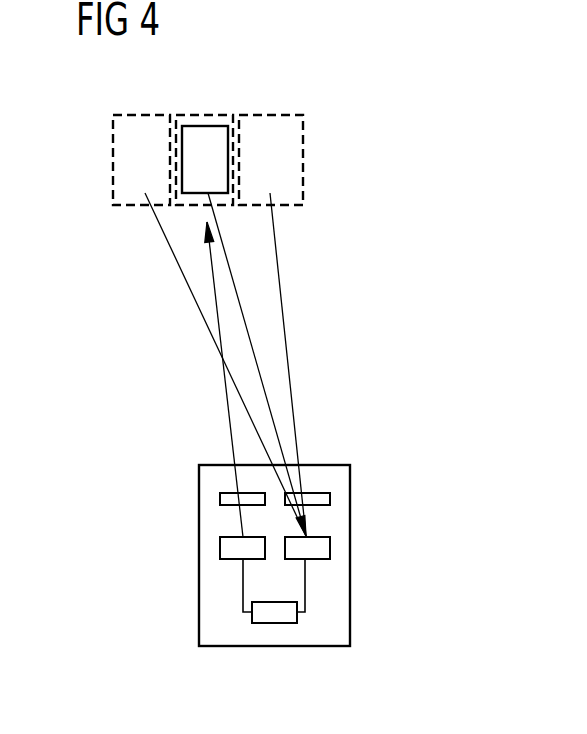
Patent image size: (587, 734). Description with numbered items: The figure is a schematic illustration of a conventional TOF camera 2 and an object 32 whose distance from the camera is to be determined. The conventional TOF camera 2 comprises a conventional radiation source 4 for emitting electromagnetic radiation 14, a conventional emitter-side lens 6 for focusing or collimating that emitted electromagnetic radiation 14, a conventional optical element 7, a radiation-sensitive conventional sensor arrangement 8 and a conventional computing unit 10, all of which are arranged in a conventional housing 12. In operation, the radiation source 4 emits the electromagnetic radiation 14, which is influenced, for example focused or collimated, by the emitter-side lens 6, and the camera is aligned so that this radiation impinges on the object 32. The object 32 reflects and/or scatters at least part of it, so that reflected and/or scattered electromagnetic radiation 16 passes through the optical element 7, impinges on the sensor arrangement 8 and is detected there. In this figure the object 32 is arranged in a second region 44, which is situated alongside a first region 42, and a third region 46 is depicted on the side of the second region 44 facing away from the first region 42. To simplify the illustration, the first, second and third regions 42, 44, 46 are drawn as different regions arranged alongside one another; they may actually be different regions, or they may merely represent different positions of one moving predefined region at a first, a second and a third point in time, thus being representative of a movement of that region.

The conventional TOF camera 2 is at (182, 603).
The conventional radiation source 4 is at (220, 548).
The conventional emitter-side lens 6 is at (220, 498).
The conventional optical element 7 is at (330, 498).
The conventional sensor arrangement 8 is at (330, 548).
The conventional computing unit 10 is at (275, 623).
The conventional housing 12 is at (350, 592).
The electromagnetic radiation 14 is at (145, 366).
The reflected and/or scattered electromagnetic radiation 16 is at (260, 378).
The object 32 is at (228, 157).
The first region 42 is at (252, 115).
The second region 44 is at (198, 115).
The third region 46 is at (132, 115).